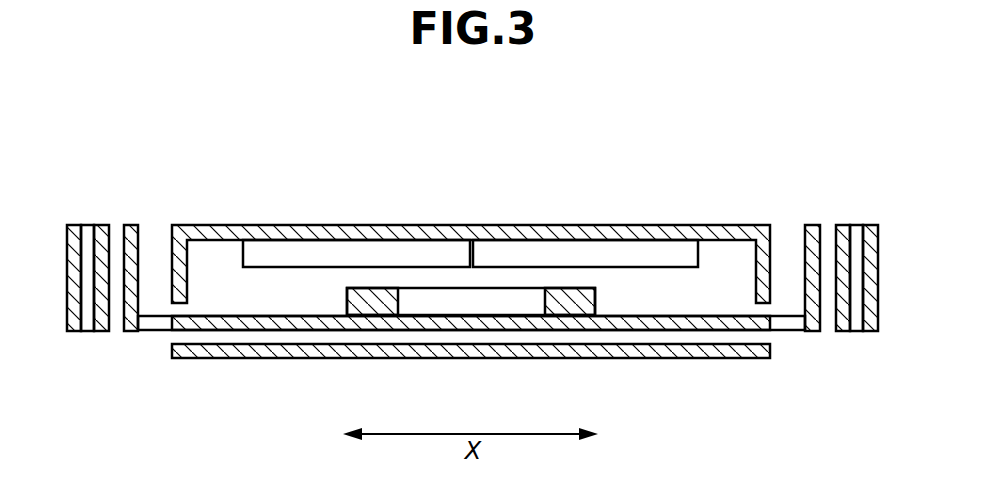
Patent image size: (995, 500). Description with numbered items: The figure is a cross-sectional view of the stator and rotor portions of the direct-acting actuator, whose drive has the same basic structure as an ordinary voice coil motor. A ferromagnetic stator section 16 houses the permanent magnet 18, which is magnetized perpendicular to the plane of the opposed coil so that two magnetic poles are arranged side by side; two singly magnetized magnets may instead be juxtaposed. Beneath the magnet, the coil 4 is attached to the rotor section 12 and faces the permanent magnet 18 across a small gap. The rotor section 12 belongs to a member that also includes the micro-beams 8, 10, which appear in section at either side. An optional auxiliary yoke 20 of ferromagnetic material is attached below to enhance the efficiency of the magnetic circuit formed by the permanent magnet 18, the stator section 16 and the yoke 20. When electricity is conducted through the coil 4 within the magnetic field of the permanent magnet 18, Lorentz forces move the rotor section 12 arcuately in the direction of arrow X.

The coil 4 is at (423, 303).
The micro-beam 8 is at (845, 332).
The micro-beam 10 is at (102, 331).
The rotor section 12 is at (252, 331).
The stator section 16 is at (683, 226).
The permanent magnet 18 is at (432, 257).
The auxiliary yoke 20 is at (695, 359).